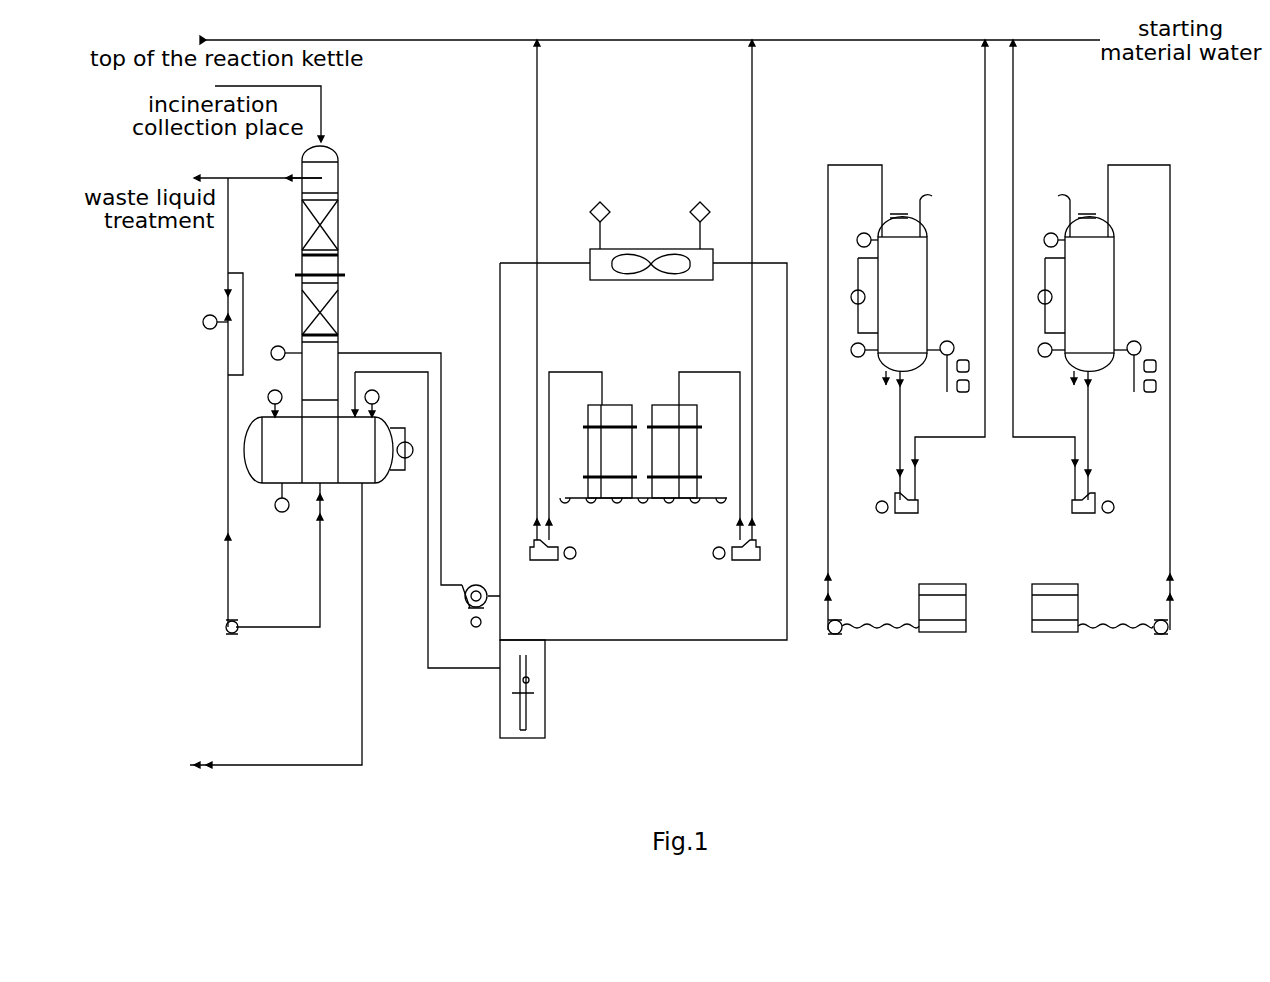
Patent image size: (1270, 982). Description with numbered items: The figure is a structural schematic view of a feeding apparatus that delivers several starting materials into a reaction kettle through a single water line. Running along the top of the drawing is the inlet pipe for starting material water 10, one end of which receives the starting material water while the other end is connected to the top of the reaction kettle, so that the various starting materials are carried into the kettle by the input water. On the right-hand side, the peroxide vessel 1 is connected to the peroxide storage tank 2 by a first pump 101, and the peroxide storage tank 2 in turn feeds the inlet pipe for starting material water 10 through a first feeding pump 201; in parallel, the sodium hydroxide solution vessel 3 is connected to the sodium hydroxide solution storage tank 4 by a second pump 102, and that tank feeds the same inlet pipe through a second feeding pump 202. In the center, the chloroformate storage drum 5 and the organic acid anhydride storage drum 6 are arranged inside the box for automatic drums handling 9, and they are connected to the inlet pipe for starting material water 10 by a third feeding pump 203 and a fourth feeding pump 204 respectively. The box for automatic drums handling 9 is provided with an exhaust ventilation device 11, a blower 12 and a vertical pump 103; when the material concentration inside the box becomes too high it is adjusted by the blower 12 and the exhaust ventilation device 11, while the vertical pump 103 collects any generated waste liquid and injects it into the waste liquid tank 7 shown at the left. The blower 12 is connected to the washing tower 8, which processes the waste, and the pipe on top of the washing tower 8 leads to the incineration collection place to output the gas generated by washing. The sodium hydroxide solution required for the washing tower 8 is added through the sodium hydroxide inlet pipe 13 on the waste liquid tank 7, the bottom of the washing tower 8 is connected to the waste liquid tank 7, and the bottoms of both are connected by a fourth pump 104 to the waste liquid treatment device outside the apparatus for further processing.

The peroxide vessel 1 is at (955, 572).
The peroxide storage tank 2 is at (1030, 582).
The sodium hydroxide solution vessel 3 is at (903, 197).
The sodium hydroxide solution storage tank 4 is at (1090, 200).
The chloroformate storage drum 5 is at (665, 400).
The organic acid anhydride storage drum 6 is at (618, 397).
The waste liquid tank 7 is at (383, 500).
The washing tower 8 is at (352, 240).
The box for automatic drums handling 9 is at (740, 648).
The inlet pipe for starting material water 10 is at (1080, 46).
The exhaust ventilation device 11 is at (652, 237).
The blower 12 is at (472, 568).
The sodium hydroxide inlet pipe 13 is at (300, 755).
The first pump 101 is at (848, 638).
The second pump 102 is at (1152, 640).
The vertical pump 103 is at (552, 716).
The fourth pump 104 is at (224, 623).
The first feeding pump 201 is at (922, 500).
The second feeding pump 202 is at (1087, 517).
The third feeding pump 203 is at (742, 563).
The fourth feeding pump 204 is at (556, 567).